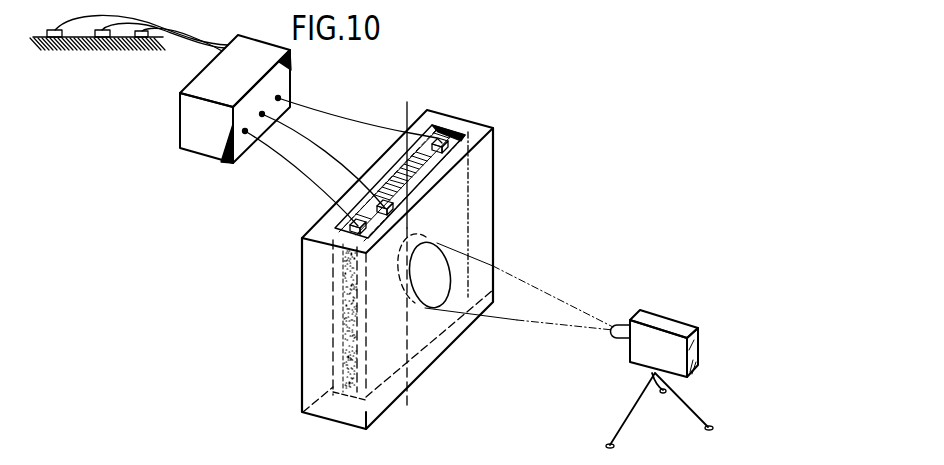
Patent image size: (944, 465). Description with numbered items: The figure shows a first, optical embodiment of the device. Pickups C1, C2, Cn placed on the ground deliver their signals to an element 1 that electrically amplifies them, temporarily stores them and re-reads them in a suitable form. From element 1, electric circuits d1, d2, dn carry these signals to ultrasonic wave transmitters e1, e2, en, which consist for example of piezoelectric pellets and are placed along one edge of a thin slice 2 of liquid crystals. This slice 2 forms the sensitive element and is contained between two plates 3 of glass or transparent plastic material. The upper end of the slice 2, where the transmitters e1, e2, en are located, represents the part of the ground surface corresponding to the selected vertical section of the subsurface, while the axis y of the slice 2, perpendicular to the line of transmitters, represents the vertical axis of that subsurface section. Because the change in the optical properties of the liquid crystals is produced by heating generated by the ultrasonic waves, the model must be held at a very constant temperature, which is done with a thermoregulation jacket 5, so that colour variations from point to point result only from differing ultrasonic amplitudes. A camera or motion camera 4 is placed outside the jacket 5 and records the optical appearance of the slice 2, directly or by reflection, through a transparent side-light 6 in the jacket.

The element for electric amplification, temporary storage and re-reading 1 is at (180, 128).
The thin slice of liquid crystals 2 is at (345, 322).
The plates of glass or transparent plastic material 3 is at (333, 300).
The camera or motion camera 4 is at (680, 318).
The thermoregulation jacket 5 is at (497, 137).
The transparent side-light 6 is at (437, 243).
The pickup C1 is at (54, 58).
The pickup C2 is at (105, 58).
The pickup Cn is at (145, 59).
The electric circuit d1 is at (310, 185).
The electric circuit d2 is at (320, 147).
The electric circuit dn is at (318, 112).
The ultrasonic wave transmitter e1 is at (368, 228).
The ultrasonic wave transmitter e2 is at (395, 206).
The ultrasonic wave transmitter en is at (441, 140).
The axis yy' y is at (417, 263).